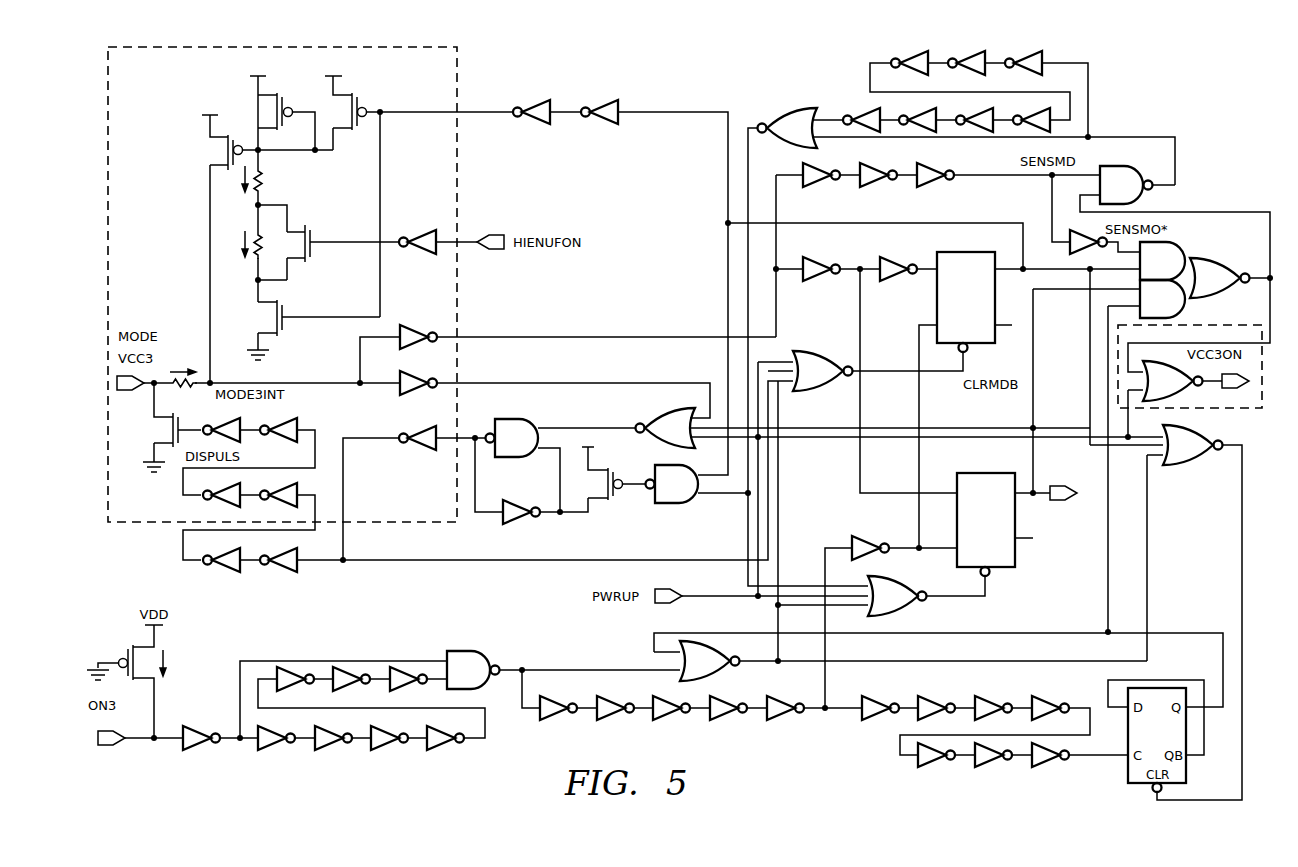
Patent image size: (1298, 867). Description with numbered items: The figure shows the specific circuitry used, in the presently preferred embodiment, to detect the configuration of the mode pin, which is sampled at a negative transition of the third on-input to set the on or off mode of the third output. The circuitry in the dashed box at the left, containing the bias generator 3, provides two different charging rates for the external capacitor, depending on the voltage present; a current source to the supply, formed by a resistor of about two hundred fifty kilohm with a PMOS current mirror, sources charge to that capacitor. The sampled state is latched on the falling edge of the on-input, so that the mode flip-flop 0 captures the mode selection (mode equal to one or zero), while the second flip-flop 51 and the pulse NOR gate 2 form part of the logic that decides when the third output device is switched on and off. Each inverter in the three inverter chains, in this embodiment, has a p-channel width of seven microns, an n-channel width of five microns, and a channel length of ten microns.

The PBIAS3 bias generator 3 is at (297, 221).
The MODE0 flip-flop 0 is at (974, 292).
The MOD51 flip-flop 51 is at (1021, 522).
The DN2PLS* NOR gate 2 is at (663, 661).